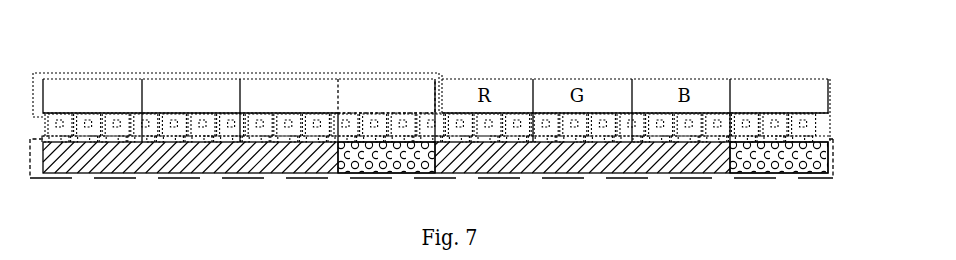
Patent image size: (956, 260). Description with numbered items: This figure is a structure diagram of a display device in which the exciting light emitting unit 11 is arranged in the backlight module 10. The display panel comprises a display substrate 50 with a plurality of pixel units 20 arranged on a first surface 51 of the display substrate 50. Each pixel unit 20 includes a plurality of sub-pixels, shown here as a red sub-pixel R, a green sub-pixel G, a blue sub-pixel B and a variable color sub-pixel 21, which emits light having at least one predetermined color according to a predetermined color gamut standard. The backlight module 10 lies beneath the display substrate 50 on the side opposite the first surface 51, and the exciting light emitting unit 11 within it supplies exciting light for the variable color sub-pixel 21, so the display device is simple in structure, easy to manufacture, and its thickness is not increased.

The backlight module 10 is at (833, 152).
The exciting light emitting unit 11 is at (779, 174).
The pixel unit 20 is at (443, 73).
The variable color sub-pixel 21 is at (583, 96).
The display substrate 50 is at (436, 79).
The first surface 51 is at (583, 118).